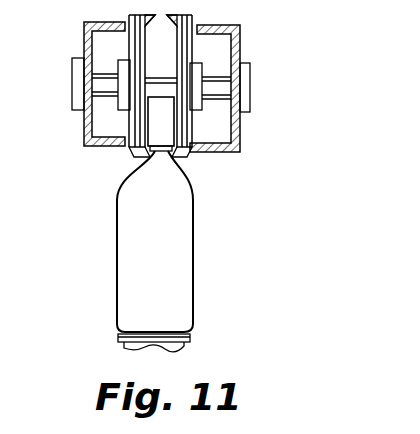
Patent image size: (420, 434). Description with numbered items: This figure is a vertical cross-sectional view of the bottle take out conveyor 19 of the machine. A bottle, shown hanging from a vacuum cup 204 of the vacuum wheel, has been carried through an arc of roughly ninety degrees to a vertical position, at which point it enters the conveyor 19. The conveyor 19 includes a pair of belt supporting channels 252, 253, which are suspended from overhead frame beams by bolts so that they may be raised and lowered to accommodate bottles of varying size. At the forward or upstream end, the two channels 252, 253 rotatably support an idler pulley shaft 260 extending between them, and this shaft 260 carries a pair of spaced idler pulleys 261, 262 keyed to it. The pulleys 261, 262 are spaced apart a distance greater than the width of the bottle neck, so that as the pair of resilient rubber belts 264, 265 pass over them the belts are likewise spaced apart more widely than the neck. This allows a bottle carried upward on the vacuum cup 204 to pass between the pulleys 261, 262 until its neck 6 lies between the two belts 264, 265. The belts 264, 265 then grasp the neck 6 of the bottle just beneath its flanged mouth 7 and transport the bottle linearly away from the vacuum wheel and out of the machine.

The belt conveyor 19 is at (206, 10).
The belt supporting channel 253 is at (84, 23).
The belt supporting channel 252 is at (240, 27).
The idler pulley shaft 260 is at (222, 88).
The idler pulley 261 is at (191, 113).
The idler pulley 262 is at (127, 110).
The resilient rubber belt 264 is at (186, 157).
The resilient rubber belt 265 is at (132, 155).
The flanged mouth 7 is at (157, 143).
The neck 6 is at (167, 165).
The vacuum cup 204 is at (190, 340).